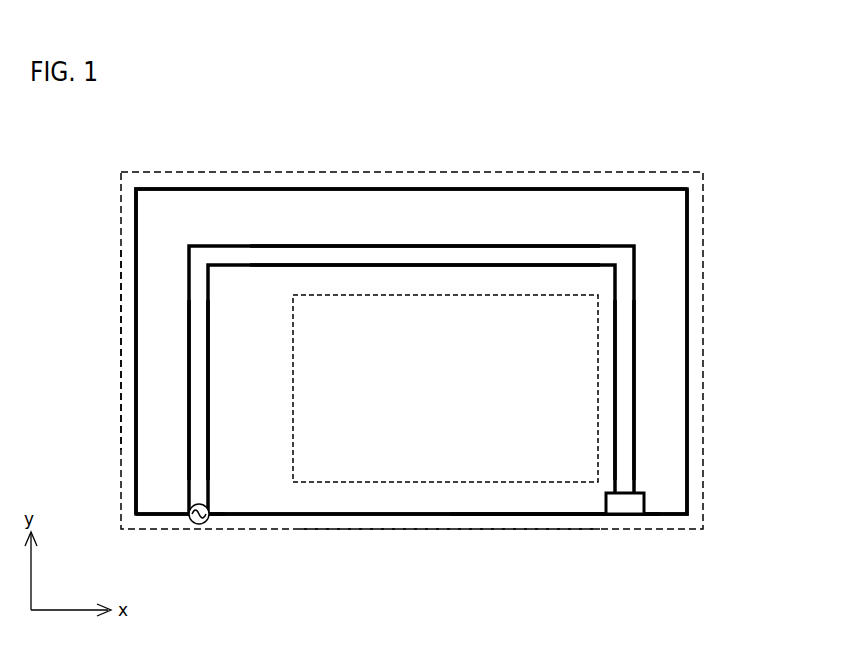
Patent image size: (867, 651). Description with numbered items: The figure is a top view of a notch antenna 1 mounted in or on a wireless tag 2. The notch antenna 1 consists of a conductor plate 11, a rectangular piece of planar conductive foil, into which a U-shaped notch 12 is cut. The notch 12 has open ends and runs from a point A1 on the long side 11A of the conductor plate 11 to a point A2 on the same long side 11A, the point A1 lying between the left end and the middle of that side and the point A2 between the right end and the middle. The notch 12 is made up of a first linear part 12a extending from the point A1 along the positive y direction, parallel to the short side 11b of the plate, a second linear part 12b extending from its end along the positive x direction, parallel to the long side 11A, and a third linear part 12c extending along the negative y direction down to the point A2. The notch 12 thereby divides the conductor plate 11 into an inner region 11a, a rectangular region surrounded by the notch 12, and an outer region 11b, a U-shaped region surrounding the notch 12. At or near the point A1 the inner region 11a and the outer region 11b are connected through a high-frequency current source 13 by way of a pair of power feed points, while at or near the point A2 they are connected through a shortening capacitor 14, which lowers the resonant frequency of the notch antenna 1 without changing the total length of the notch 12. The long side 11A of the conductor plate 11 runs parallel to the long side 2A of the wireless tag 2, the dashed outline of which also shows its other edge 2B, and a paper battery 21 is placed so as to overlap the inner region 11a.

The notch antenna 1 is at (737, 184).
The wireless tag 2 is at (600, 172).
The long side of wireless tag 2A is at (458, 532).
The second edge of substrate 2B is at (120, 316).
The conductor plate 11 is at (688, 350).
The inner region 11a is at (389, 508).
The outer region 11b is at (418, 195).
The long side of conductor plate 11A is at (519, 509).
The notch 12 is at (508, 257).
The first linear part 12a is at (210, 376).
The second linear part 12b is at (360, 252).
The third linear part 12c is at (620, 374).
The high-frequency current source 13 is at (190, 521).
The capacitor 14 is at (636, 505).
The paper battery 21 is at (293, 456).
The point A1 is at (206, 536).
The point A2 is at (636, 536).